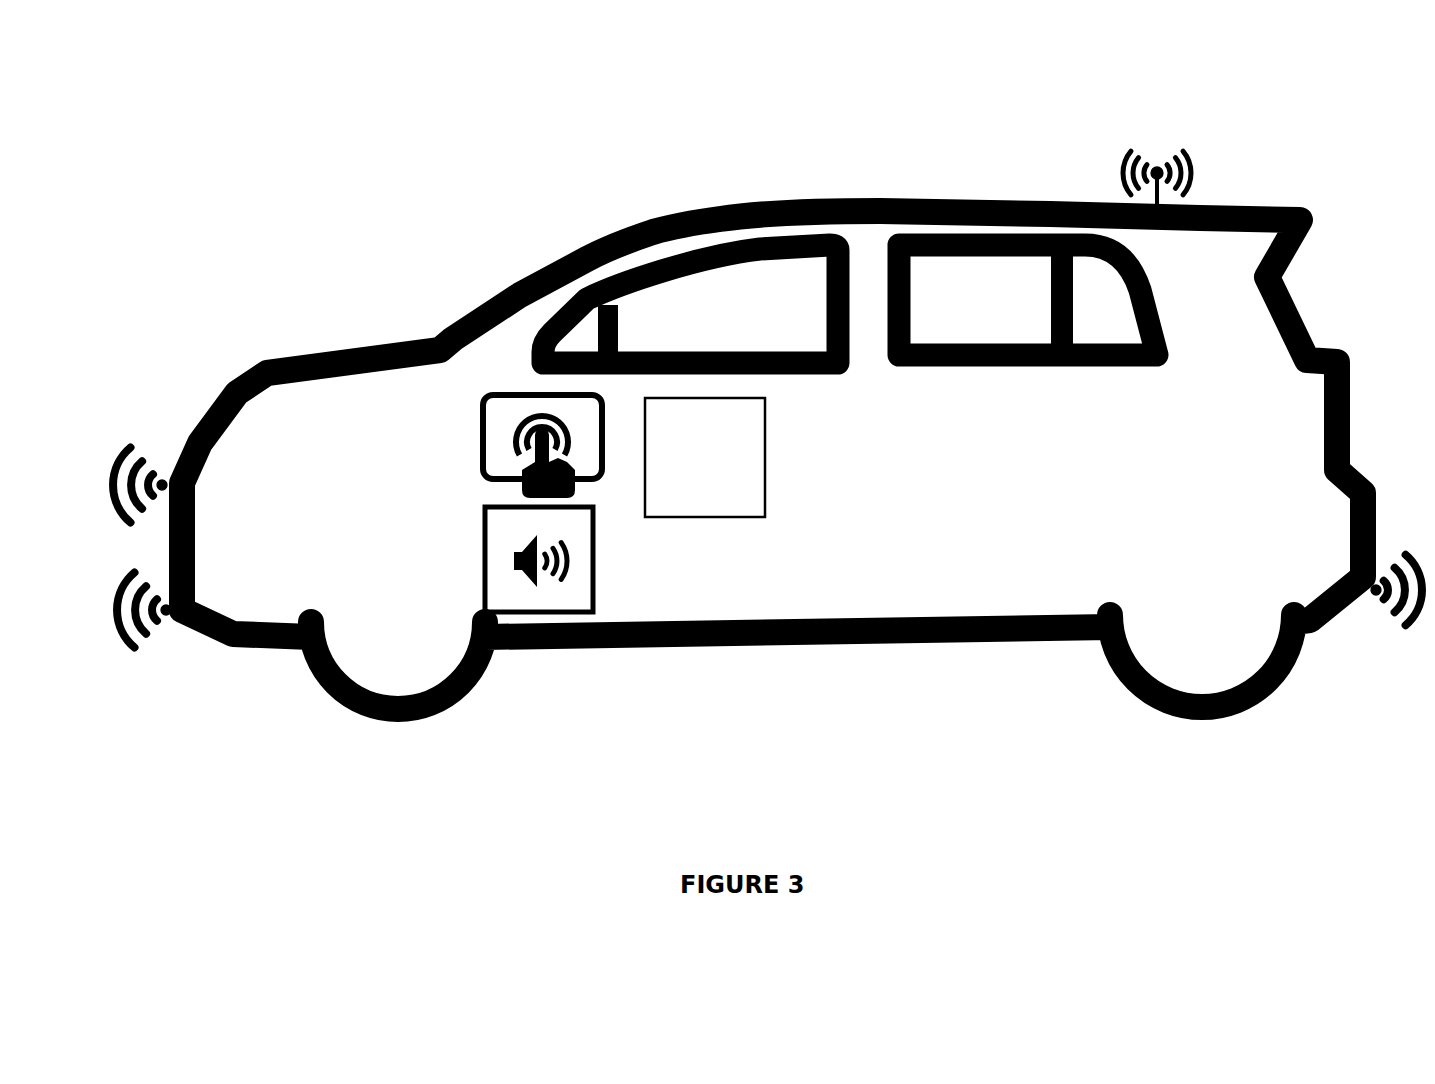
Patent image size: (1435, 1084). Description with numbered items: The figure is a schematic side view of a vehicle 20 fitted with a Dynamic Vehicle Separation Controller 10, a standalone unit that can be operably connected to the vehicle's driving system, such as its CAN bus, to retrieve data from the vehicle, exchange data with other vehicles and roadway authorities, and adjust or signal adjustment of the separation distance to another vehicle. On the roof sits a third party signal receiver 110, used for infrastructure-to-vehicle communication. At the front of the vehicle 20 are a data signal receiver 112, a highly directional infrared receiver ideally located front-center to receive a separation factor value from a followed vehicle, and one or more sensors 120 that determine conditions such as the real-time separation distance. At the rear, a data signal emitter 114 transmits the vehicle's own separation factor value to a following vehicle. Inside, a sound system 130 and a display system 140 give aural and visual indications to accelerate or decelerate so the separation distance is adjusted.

The Dynamic Vehicle Separation Controller 10 is at (705, 482).
The vehicle 20 is at (357, 348).
The third party signal receiver 110 is at (1153, 168).
The data signal receiver 112 is at (170, 622).
The data signal emitter 114 is at (1374, 597).
The sensor 120 is at (160, 482).
The sound system 130 is at (548, 592).
The display system 140 is at (481, 452).